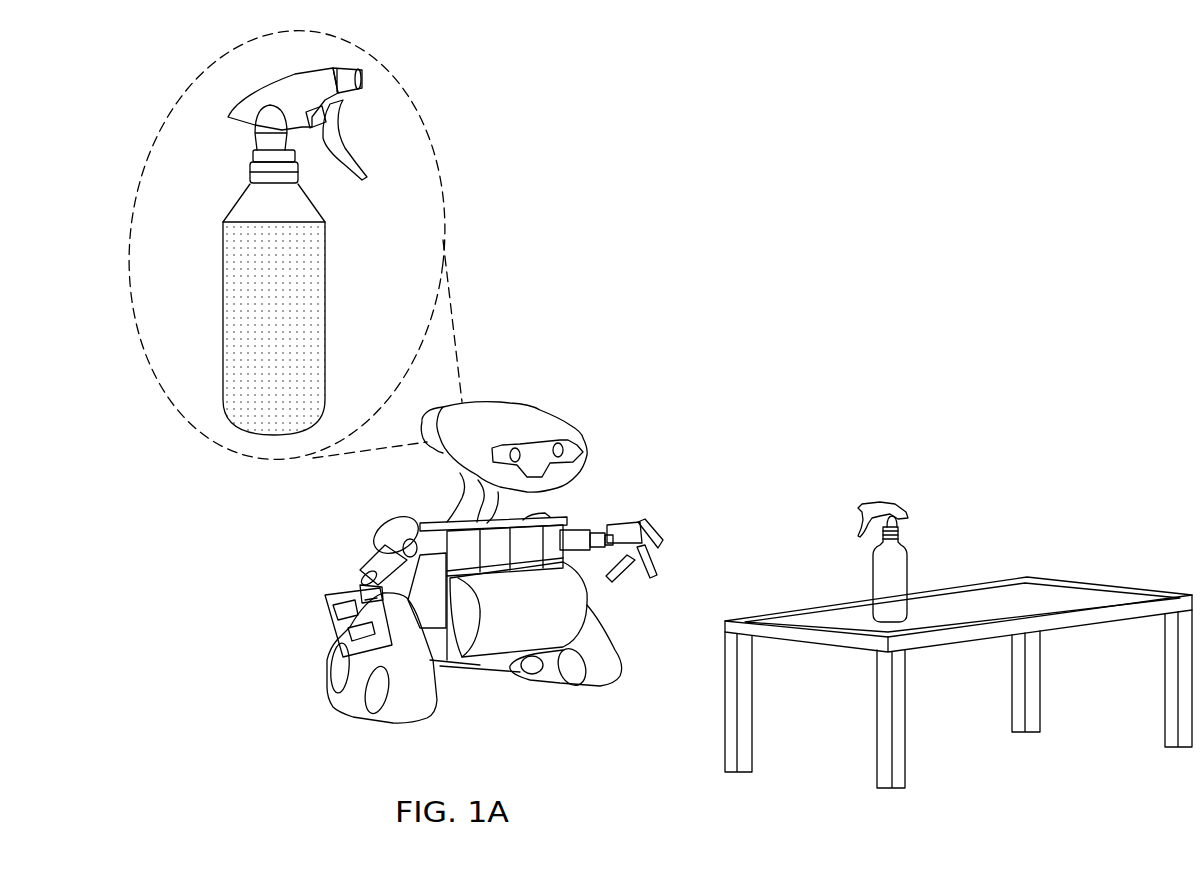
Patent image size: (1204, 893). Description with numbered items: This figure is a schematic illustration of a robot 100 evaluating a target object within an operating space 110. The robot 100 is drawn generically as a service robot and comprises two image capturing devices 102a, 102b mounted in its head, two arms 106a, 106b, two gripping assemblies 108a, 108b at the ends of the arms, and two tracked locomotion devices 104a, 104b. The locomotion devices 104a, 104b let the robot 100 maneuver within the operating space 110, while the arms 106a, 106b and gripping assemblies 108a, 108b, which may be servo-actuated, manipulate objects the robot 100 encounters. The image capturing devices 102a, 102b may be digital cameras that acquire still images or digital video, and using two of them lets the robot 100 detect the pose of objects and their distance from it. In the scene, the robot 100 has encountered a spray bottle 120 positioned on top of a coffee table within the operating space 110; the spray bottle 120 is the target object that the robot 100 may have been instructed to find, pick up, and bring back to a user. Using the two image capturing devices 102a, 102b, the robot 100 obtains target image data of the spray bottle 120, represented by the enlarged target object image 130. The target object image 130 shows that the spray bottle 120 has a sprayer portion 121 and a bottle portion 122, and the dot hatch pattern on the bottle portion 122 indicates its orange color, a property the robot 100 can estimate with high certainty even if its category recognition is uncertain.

The robot 100 is at (617, 508).
The image capturing device 102a is at (516, 448).
The image capturing device 102b is at (564, 448).
The locomotion device 104a is at (350, 713).
The locomotion device 104b is at (607, 638).
The arm 106a is at (376, 556).
The arm 106b is at (583, 528).
The gripping assembly 108a is at (330, 618).
The gripping assembly 108b is at (661, 545).
The operating space 110 is at (1020, 500).
The spray bottle 120 is at (544, 313).
The sprayer portion 121 is at (243, 100).
The bottle portion 122 is at (224, 287).
The target object image 130 is at (456, 108).